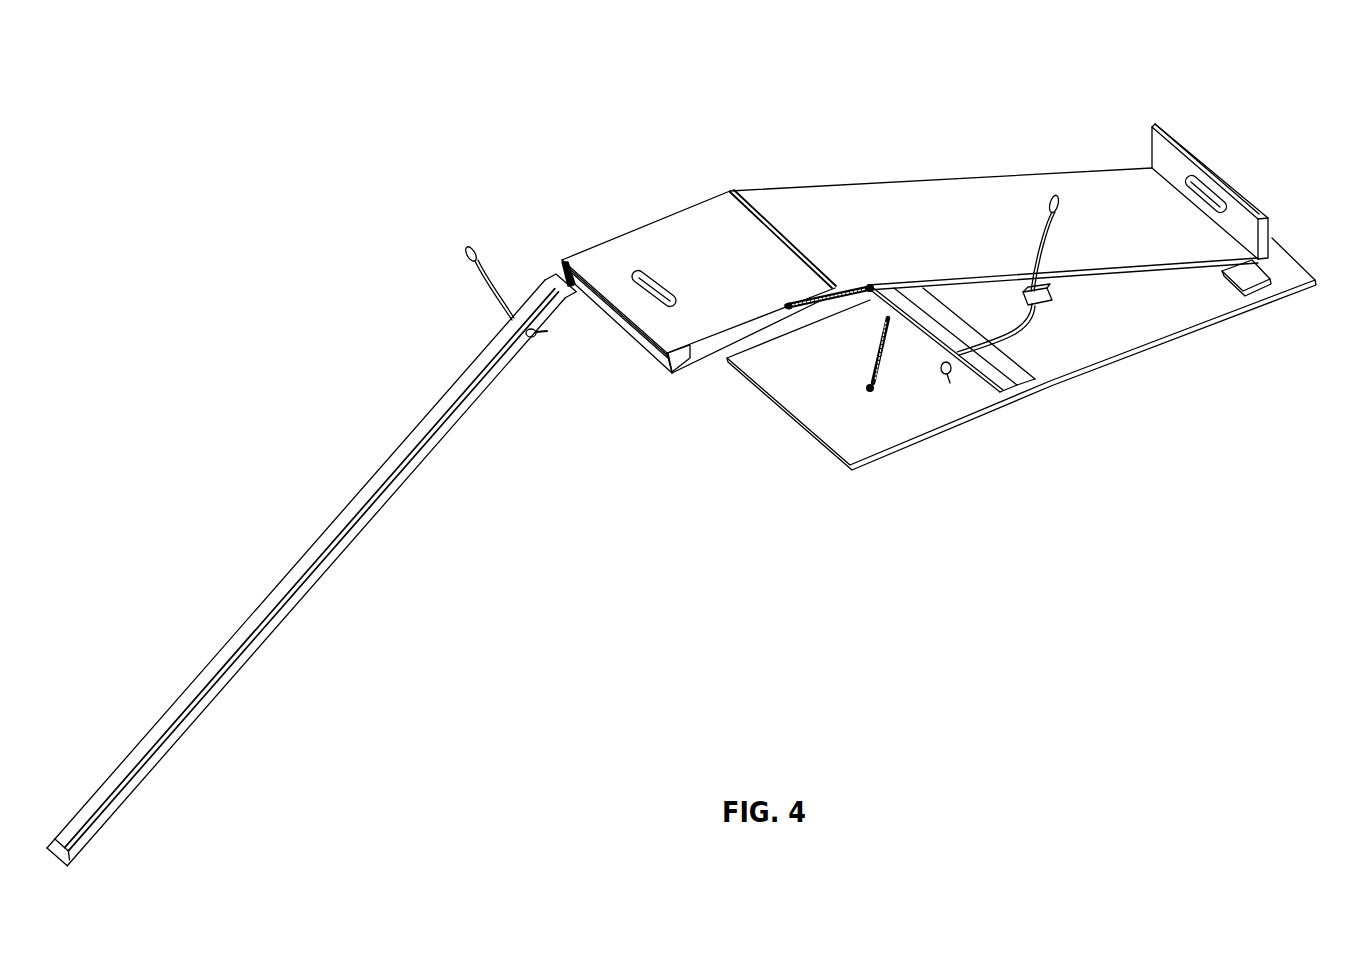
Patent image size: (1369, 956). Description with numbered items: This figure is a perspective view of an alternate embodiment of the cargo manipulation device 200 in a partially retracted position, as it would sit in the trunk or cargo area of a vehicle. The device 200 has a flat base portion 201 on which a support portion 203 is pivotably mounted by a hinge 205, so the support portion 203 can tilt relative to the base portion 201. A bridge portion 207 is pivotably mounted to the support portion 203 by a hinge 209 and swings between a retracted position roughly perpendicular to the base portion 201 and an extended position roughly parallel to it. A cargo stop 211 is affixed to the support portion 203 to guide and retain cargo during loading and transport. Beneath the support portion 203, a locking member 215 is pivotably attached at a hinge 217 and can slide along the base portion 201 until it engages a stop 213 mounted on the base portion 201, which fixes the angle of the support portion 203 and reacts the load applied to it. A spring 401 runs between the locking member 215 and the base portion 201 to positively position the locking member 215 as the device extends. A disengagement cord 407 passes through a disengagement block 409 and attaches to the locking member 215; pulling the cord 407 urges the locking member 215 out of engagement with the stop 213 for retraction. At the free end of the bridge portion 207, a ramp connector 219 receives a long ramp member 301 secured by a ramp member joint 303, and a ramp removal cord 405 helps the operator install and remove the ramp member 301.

The cargo manipulation device 200 is at (545, 84).
The base portion 201 is at (1105, 342).
The support portion 203 is at (975, 200).
The hinge 205 is at (1272, 268).
The bridge portion 207 is at (643, 271).
The hinge 209 is at (836, 306).
The cargo stop 211 is at (1182, 147).
The stop 213 is at (1000, 360).
The locking member 215 is at (945, 380).
The hinge 217 is at (866, 285).
The ramp connector 219 is at (618, 326).
The ramp member 301 is at (430, 449).
The ramp member joint 303 is at (562, 264).
The spring 401 is at (873, 360).
The ramp removal cord 405 is at (474, 279).
The disengagement cord 407 is at (1062, 197).
The disengagement block 409 is at (813, 297).